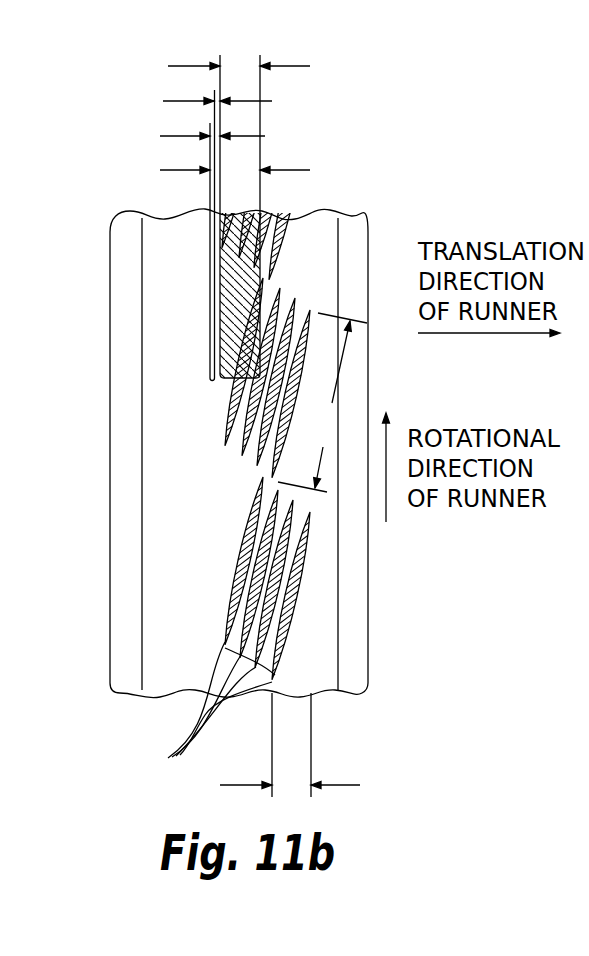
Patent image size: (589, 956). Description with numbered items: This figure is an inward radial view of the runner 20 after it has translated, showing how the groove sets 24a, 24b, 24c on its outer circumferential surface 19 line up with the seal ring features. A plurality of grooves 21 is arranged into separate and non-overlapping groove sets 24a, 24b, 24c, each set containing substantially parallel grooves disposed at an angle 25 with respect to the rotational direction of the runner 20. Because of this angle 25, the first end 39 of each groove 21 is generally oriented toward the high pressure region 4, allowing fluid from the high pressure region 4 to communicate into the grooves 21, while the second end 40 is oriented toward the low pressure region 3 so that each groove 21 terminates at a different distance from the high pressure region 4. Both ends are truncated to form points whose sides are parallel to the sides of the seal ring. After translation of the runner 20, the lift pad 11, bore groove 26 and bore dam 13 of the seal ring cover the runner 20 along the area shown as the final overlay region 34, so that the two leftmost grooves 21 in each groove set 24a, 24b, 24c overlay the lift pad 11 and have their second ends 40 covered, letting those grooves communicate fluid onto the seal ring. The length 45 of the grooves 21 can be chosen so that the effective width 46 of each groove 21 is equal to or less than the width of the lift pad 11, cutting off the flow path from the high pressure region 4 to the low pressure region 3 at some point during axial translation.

The low pressure region 3 is at (60, 326).
The high pressure region 4 is at (417, 386).
The lift pad 11 is at (225, 66).
The bore dam 13 is at (195, 136).
The outer circumferential surface 19 is at (320, 673).
The runner 20 is at (123, 670).
The grooves 21 is at (204, 706).
The groove set 24a is at (228, 578).
The groove set 24b is at (220, 397).
The groove set 24c is at (212, 217).
The angle 25 is at (250, 487).
The bore groove 26 is at (200, 101).
The final overlay region 34 is at (255, 170).
The first end 39 is at (310, 535).
The second end 40 is at (290, 690).
The length 45 is at (322, 402).
The effective width 46 is at (310, 745).